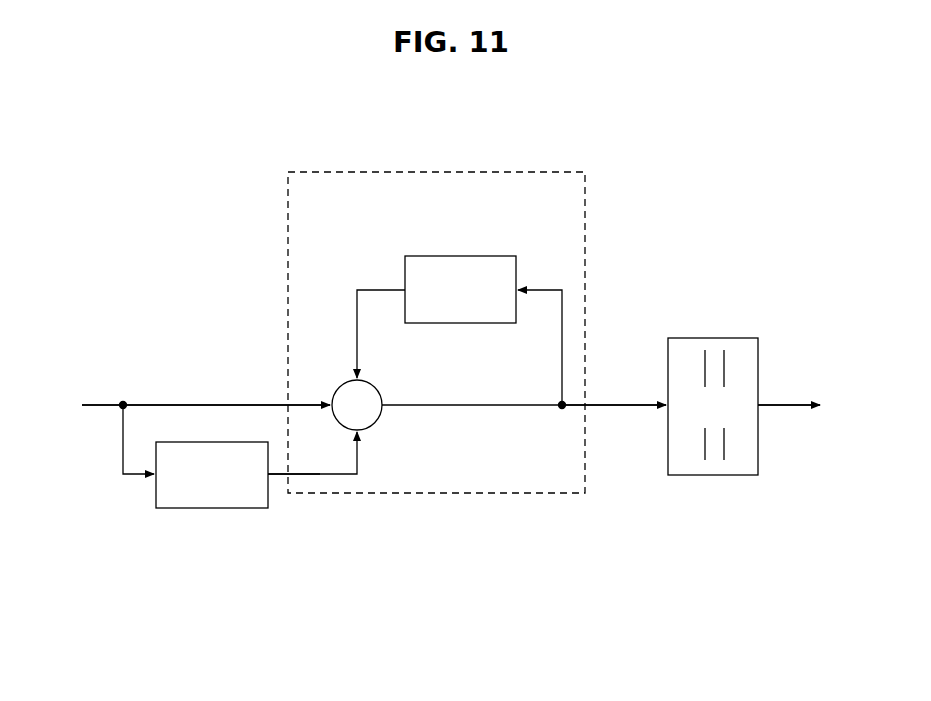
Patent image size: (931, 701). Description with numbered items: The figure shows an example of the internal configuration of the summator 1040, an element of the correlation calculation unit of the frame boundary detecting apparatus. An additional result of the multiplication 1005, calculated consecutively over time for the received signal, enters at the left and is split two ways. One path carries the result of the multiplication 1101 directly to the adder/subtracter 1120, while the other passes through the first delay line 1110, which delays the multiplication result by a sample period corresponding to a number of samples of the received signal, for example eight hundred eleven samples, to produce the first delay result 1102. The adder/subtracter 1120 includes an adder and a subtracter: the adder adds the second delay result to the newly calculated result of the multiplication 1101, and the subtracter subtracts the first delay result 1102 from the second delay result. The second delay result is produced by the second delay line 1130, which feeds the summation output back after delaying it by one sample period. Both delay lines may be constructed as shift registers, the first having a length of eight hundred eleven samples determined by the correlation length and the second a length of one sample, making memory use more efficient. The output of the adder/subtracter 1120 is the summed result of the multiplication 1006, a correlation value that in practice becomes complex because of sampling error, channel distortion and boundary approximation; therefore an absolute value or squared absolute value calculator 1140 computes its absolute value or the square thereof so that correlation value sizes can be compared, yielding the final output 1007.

The summator 1040 is at (120, 109).
The multiplication 1005 is at (95, 403).
The result of the multiplication 1101 is at (210, 403).
The first delay line 1110 is at (212, 508).
The first delay result 1102 is at (318, 478).
The adder/subtracter 1120 is at (440, 494).
The second delay line 1130 is at (458, 255).
The result of the multiplication summed by the adder/subtracter 1006 is at (612, 403).
The absolute value calculator or squared absolute value calculator 1140 is at (712, 338).
The output signal 1007 is at (792, 403).